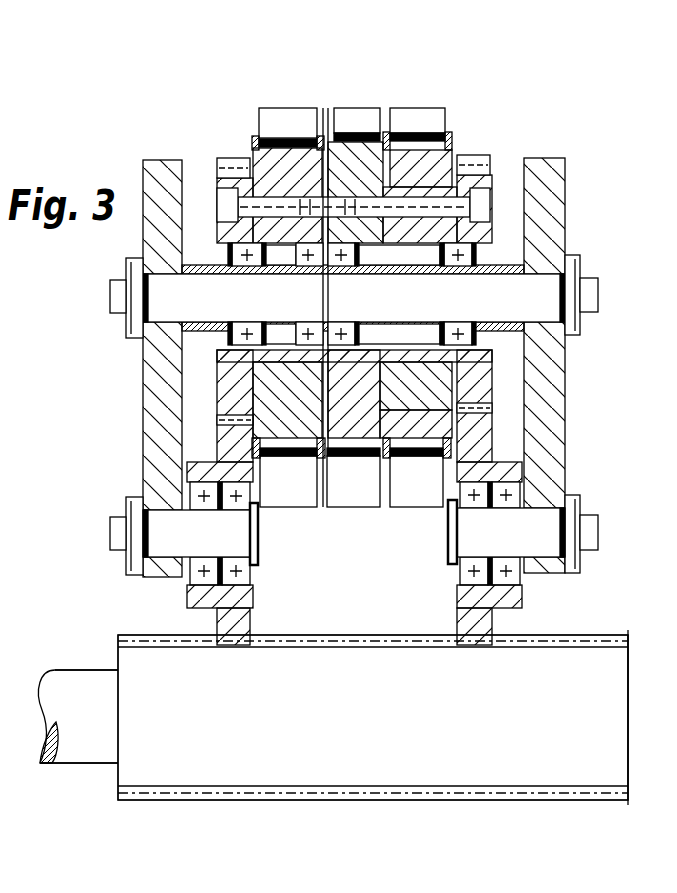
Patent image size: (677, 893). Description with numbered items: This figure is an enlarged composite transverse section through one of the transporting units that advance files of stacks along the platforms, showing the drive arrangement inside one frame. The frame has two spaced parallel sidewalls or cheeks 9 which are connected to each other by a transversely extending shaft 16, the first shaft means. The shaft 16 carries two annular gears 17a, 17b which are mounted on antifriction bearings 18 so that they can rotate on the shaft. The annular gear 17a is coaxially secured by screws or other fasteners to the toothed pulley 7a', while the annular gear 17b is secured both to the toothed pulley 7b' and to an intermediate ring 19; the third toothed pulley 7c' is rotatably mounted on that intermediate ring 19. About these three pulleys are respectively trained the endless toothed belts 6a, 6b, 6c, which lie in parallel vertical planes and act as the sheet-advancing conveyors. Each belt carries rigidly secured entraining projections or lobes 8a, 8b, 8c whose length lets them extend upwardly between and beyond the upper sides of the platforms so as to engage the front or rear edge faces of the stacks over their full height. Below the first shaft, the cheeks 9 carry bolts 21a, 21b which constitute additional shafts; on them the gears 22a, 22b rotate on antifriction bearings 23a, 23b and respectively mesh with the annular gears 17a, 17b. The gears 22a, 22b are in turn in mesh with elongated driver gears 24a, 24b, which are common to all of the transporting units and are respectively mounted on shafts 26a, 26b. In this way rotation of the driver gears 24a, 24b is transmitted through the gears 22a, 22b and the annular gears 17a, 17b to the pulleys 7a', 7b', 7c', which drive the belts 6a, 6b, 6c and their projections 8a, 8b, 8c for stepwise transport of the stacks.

The cheek 9 is at (152, 170).
The shaft 16 is at (170, 300).
The annular gear 17a is at (220, 185).
The annular gear 17b is at (493, 172).
The intermediate ring 19 is at (480, 160).
The toothed pulley 7a' is at (270, 262).
The toothed pulley 7b' is at (355, 261).
The toothed pulley 7c' is at (446, 270).
The toothed belt 6a is at (296, 122).
The toothed belt 6b is at (365, 122).
The toothed belt 6c is at (425, 122).
The projection 8a is at (290, 137).
The projection 8b is at (362, 135).
The projection 8c is at (410, 125).
The antifriction bearing 18 is at (309, 268).
The bolt 21a is at (168, 541).
The bolt 21b is at (547, 527).
The gear 22a is at (243, 598).
The gear 22b is at (465, 612).
The antifriction bearing 23a is at (233, 506).
The antifriction bearing 23b is at (474, 506).
The elongated driver gear 24a is at (566, 637).
The elongated driver gear 24b is at (373, 717).
The shaft 26a is at (88, 688).
The shaft 26b is at (79, 716).